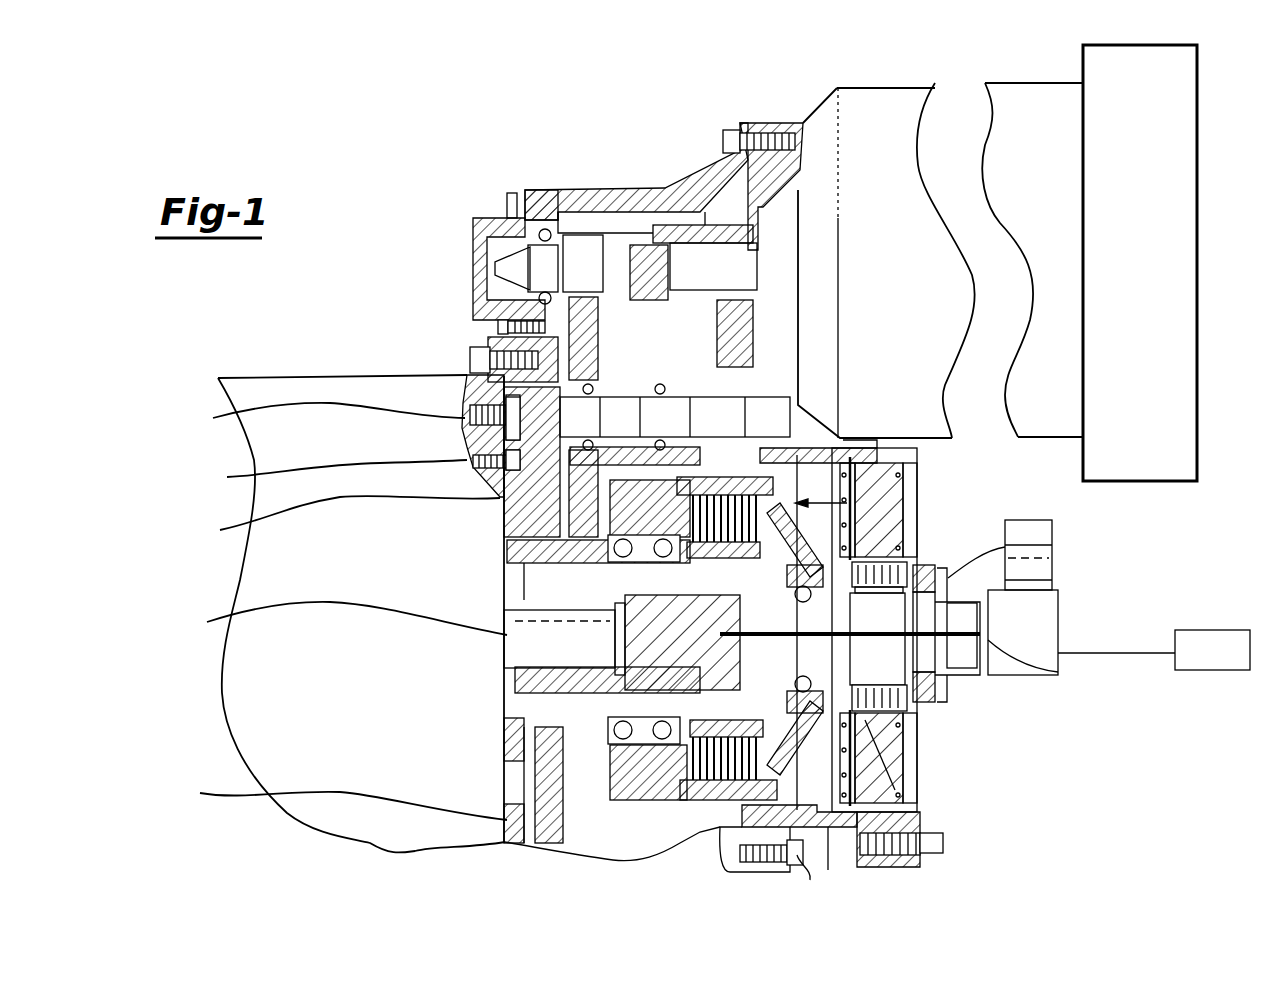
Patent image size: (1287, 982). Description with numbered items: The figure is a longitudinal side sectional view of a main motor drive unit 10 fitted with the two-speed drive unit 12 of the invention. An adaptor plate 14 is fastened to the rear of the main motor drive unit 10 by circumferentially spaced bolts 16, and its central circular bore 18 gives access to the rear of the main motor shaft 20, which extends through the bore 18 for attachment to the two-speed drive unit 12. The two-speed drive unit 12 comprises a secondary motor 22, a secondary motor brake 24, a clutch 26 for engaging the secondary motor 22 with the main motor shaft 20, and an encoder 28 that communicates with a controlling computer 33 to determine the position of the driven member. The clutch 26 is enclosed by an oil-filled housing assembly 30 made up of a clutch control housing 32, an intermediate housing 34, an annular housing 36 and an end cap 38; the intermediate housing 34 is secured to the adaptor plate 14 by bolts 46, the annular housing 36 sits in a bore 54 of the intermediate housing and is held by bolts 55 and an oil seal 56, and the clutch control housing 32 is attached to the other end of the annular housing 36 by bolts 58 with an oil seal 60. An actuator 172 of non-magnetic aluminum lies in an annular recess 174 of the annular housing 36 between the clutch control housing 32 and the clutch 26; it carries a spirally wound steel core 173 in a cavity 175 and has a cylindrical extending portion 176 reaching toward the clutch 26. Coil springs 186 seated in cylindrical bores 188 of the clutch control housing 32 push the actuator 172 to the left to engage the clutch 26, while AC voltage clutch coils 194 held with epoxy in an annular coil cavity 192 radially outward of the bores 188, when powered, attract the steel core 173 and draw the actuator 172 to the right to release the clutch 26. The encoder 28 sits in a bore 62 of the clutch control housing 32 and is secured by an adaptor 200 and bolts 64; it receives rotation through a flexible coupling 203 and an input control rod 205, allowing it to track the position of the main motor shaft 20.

The main motor drive unit 10 is at (321, 716).
The two-speed drive unit 12 is at (700, 135).
The adaptor plate 14 is at (335, 799).
The bolts 16 is at (348, 436).
The circular bore 18 is at (341, 520).
The main motor shaft 20 is at (452, 642).
The secondary motor 22 is at (910, 287).
The secondary motor brake 24 is at (1132, 254).
The clutch 26 is at (915, 506).
The encoder 28 is at (1052, 645).
The housing assembly 30 is at (630, 187).
The clutch control housing 32 is at (905, 447).
The controlling computer 33 is at (1212, 672).
The intermediate housing 34 is at (572, 190).
The annular housing 36 is at (850, 855).
The end cap 38 is at (478, 266).
The bolts 46 is at (470, 358).
The bore 54 is at (725, 848).
The bolts 55 is at (816, 875).
The oil seal 56 is at (668, 855).
The bolts 58 is at (945, 840).
The oil seal 60 is at (920, 822).
The bore 62 is at (940, 675).
The bolts 64 is at (1052, 548).
The actuator 172 is at (925, 778).
The spirally wound steel core 173 is at (917, 488).
The annular recess 174 is at (860, 432).
The cavity 175 is at (930, 770).
The cylindrical extending portion 176 is at (915, 708).
The coil springs 186 is at (918, 742).
The cylindrical bores 188 is at (928, 760).
The annular coil cavity 192 is at (920, 478).
The AC voltage clutch coils 194 is at (912, 548).
The adaptor 200 is at (1055, 582).
The flexible coupling 203 is at (1060, 605).
The input control rod 205 is at (1060, 668).